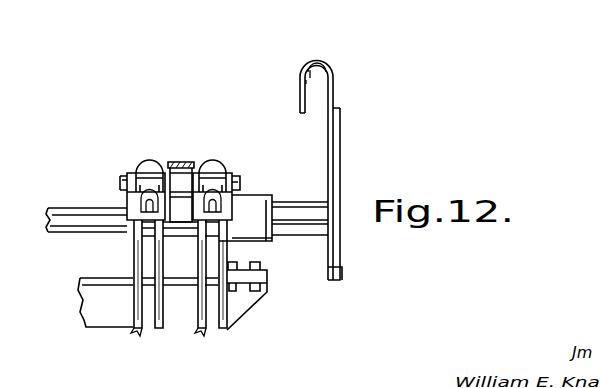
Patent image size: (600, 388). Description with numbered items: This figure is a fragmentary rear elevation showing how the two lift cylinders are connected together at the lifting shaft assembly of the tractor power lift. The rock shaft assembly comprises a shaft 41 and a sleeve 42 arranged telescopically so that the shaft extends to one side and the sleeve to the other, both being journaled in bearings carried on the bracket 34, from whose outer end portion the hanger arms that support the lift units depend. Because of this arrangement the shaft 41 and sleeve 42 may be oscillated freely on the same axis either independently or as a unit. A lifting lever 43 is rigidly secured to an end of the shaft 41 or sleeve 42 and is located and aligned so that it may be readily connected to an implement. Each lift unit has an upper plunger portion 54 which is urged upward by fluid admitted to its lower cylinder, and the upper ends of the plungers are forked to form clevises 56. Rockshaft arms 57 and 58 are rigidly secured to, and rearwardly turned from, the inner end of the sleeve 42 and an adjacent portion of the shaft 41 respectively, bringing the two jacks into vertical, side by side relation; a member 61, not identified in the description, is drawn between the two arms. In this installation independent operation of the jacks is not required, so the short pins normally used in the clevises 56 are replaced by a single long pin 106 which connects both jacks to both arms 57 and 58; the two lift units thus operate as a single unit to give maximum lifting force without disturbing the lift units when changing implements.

The bracket 34 is at (76, 304).
The shaft 41 is at (72, 230).
The sleeve 42 is at (301, 229).
The lifting lever 43 is at (337, 144).
The plunger portion 54 is at (200, 331).
The clevis 56 is at (127, 198).
The rockshaft arm 57 is at (148, 159).
The rockshaft arm 58 is at (216, 165).
The spacer block 61 is at (181, 161).
The long pin 106 is at (231, 213).